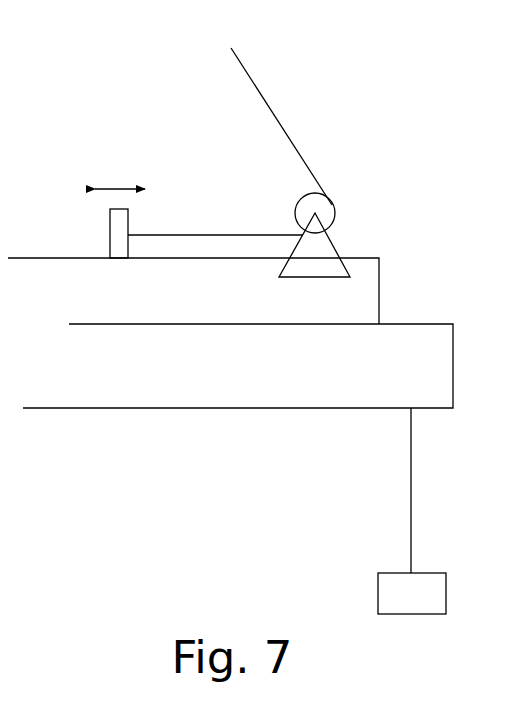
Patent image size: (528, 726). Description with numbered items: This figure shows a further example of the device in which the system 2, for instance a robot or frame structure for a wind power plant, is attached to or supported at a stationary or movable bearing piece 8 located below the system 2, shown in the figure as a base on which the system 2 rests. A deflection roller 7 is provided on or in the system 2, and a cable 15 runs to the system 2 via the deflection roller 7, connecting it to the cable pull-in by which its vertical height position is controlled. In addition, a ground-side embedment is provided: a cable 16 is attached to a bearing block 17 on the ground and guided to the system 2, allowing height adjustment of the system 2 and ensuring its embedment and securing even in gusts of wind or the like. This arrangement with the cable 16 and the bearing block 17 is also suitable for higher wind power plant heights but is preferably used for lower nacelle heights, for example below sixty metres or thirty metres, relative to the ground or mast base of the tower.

The system 2 is at (230, 379).
The deflection roller 7 is at (330, 208).
The carriage / base 8 is at (34, 250).
The cable 15 is at (272, 94).
The cable 16 is at (402, 484).
The bearing block 17 is at (369, 593).